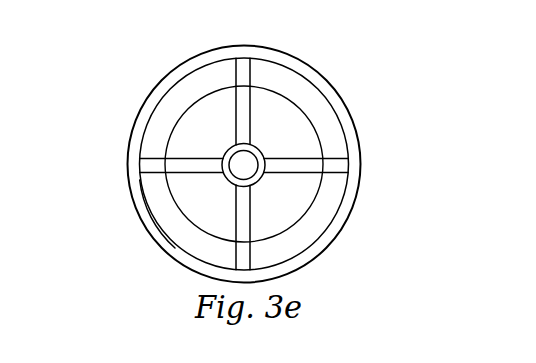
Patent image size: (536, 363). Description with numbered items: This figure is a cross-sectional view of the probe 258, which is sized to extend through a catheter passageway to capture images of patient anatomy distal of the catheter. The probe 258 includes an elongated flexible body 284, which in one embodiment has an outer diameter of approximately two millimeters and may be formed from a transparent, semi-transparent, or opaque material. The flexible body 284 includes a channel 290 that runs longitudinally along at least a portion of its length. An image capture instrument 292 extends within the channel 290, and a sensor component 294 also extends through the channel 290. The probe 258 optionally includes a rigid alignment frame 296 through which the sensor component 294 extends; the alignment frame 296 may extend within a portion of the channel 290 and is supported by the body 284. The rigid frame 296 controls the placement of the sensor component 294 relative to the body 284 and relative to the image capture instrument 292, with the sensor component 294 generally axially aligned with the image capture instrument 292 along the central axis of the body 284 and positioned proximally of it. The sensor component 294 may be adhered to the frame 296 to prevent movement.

The probe 258 is at (359, 139).
The elongated flexible body 284 is at (145, 215).
The channel 290 is at (178, 97).
The image capture instrument 292 is at (278, 105).
The sensor component 294 is at (247, 167).
The rigid alignment frame 296 is at (153, 158).